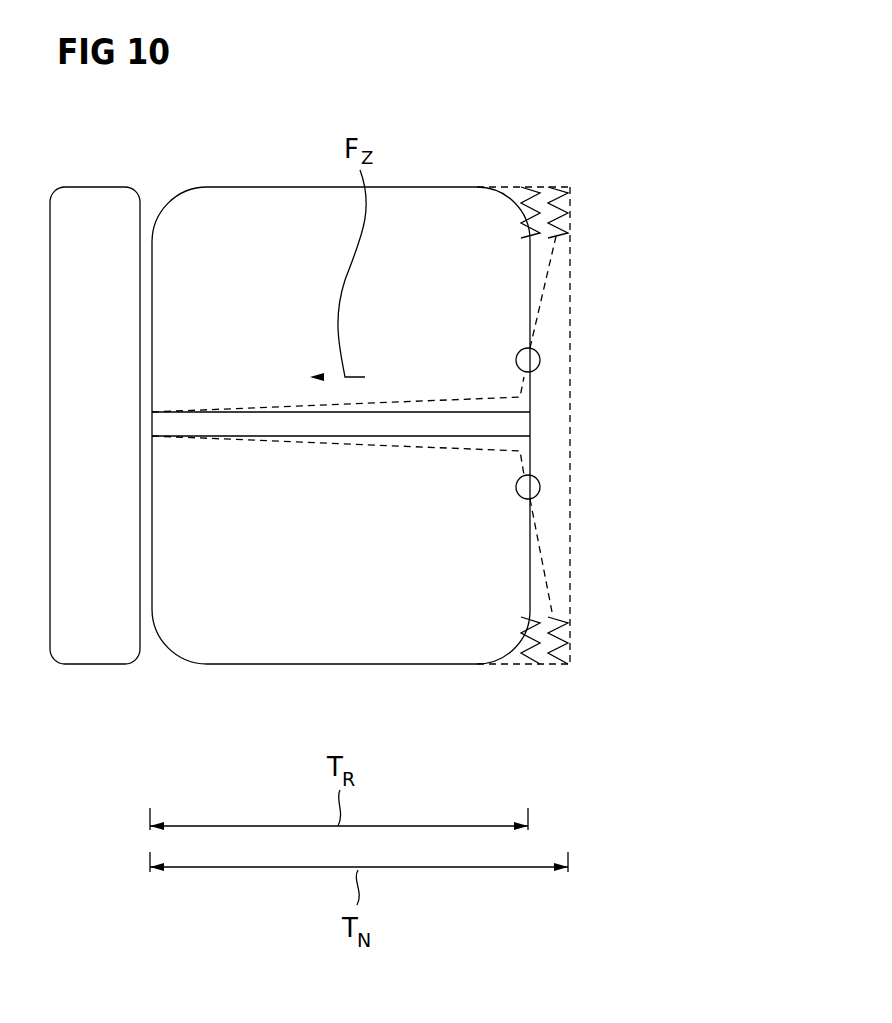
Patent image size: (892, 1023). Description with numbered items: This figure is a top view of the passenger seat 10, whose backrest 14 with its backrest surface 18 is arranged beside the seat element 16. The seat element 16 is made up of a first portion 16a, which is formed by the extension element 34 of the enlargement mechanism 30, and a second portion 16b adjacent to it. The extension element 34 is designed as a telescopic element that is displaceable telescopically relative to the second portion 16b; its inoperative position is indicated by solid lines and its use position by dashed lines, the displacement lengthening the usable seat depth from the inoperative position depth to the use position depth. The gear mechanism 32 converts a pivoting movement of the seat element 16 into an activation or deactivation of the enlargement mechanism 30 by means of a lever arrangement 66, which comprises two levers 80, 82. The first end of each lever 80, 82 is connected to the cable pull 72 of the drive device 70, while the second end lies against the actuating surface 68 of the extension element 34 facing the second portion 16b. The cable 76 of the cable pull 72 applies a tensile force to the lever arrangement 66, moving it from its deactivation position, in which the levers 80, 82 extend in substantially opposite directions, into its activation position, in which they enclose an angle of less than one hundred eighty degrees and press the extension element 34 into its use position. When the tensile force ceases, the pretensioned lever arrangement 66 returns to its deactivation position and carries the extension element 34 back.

The passenger seat 10 is at (604, 156).
The backrest 14 is at (97, 190).
The seat element 16 is at (411, 657).
The first portion of the seat element 16a is at (563, 450).
The second portion of the seat element 16b is at (331, 657).
The backrest surface 18 is at (141, 210).
The enlargement mechanism 30 is at (624, 511).
The gear mechanism 32 is at (335, 510).
The extension element 34 is at (563, 357).
The lever arrangement 66 is at (570, 311).
The actuating surface 68 is at (560, 402).
The drive device 70 is at (434, 370).
The cable pull 72 is at (219, 390).
The cable 76 is at (220, 440).
The first lever 80 is at (547, 275).
The second lever 82 is at (550, 585).